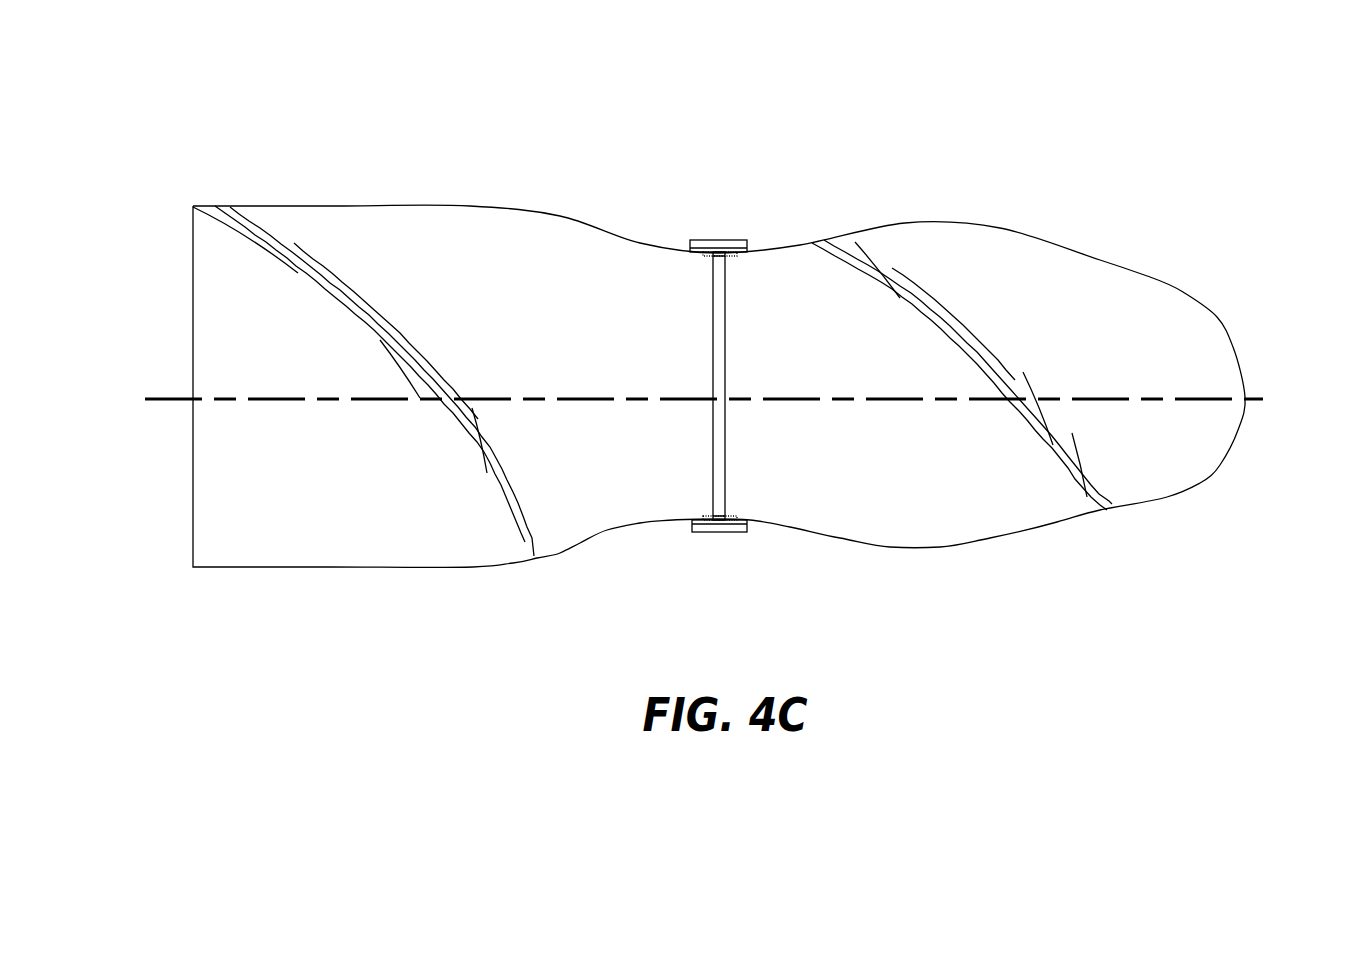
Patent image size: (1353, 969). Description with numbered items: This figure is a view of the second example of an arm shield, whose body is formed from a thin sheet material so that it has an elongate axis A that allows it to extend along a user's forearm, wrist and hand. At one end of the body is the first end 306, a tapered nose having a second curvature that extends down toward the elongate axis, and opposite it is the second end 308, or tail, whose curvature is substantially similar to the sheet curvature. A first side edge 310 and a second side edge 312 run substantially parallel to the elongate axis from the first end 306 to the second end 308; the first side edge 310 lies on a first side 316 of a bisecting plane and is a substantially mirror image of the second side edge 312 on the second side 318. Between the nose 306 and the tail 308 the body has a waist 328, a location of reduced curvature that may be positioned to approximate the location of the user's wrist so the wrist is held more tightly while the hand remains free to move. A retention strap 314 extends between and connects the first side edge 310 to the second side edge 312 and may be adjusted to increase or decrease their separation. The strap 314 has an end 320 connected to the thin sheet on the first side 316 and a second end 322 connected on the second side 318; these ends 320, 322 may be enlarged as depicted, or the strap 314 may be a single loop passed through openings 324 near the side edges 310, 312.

The first end 306 is at (1188, 338).
The second end 308 is at (210, 489).
The first side edge 310 is at (610, 528).
The second side edge 312 is at (555, 233).
The retention strap 314 is at (720, 335).
The first side 316 is at (1003, 573).
The second side 318 is at (802, 118).
The end of retention strap 320 is at (725, 528).
The second end of retention strap 322 is at (727, 247).
The openings 324 is at (700, 262).
The waist 328 is at (778, 233).